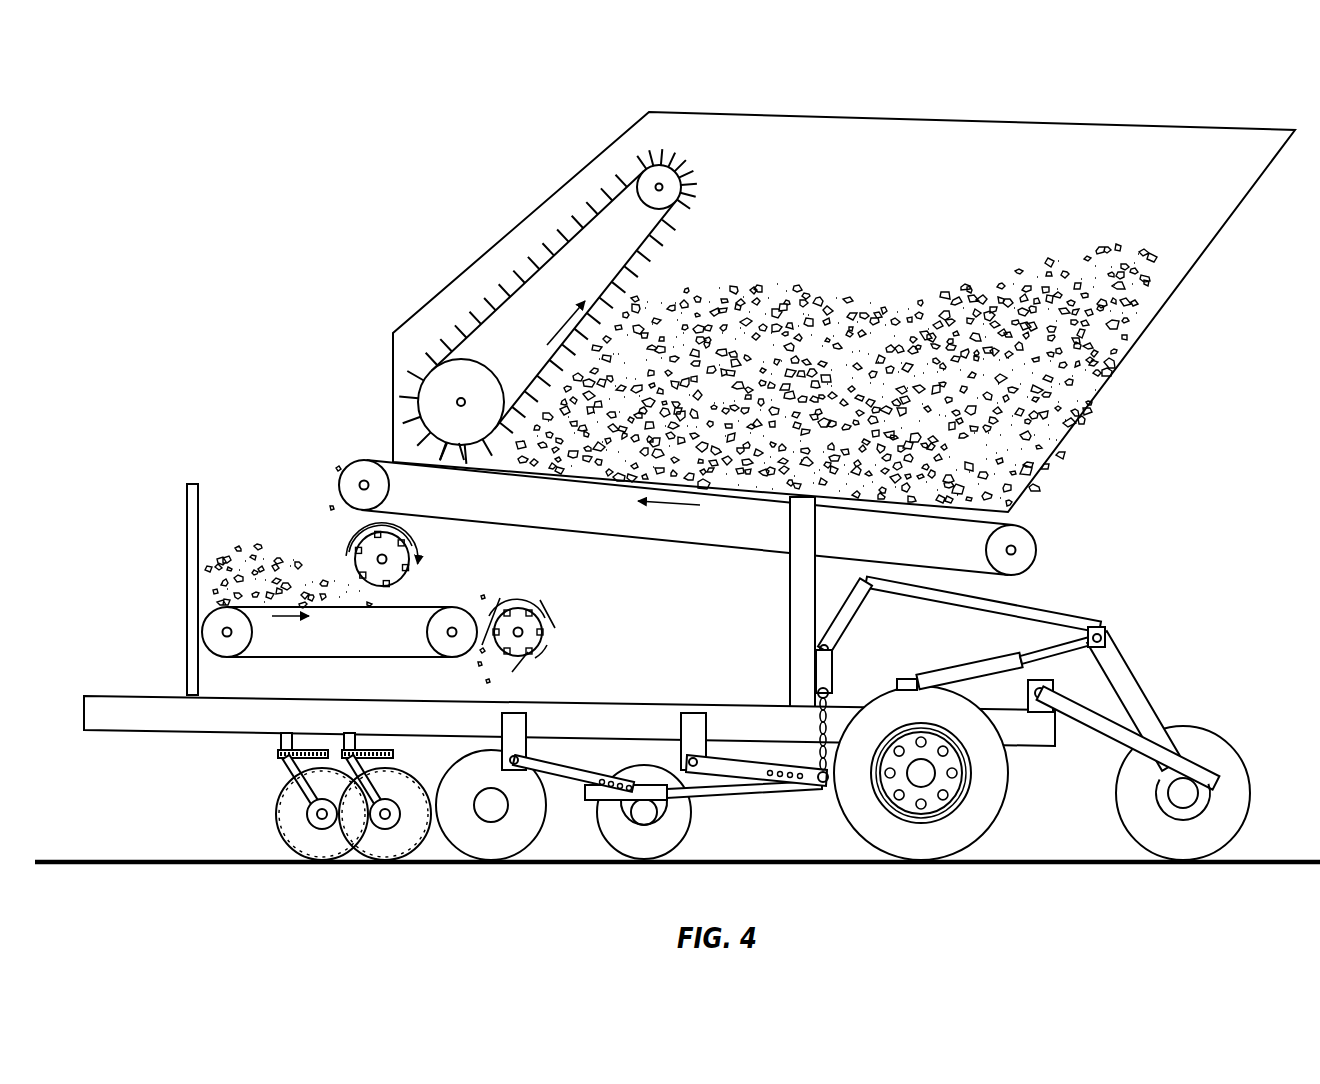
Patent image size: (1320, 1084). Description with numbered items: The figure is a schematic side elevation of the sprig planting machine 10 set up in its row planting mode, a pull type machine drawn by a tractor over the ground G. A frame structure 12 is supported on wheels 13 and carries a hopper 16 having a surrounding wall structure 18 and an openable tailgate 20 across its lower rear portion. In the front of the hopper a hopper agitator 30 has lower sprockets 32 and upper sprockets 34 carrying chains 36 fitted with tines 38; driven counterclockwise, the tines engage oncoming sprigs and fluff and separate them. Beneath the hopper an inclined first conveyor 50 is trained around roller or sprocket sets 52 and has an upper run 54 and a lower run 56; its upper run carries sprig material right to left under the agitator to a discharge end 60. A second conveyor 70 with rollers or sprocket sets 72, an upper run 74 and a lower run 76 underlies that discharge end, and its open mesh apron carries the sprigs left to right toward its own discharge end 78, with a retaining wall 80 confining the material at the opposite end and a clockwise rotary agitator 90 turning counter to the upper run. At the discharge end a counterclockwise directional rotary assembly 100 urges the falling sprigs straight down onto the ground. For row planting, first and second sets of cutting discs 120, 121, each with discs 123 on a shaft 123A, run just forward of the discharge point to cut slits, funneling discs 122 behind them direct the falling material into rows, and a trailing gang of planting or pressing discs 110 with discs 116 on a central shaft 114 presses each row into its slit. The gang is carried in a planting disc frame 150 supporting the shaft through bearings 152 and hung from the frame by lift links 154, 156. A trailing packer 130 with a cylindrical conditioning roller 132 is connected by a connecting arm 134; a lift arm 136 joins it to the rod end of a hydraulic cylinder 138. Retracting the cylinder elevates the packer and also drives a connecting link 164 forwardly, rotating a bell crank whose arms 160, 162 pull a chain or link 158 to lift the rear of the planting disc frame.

The sprig planting machine 10 is at (300, 158).
The frame structure 12 is at (158, 723).
The wheels 13 is at (940, 850).
The hopper 16 is at (1203, 110).
The wall structure 18 is at (888, 224).
The tailgate 20 is at (1052, 458).
The hopper agitator 30 is at (542, 268).
The lower sprockets 32 is at (420, 390).
The upper sprockets 34 is at (657, 163).
The chains 36 is at (537, 270).
The tines 38 is at (565, 228).
The first conveyor 50 is at (688, 539).
The roller or sprocket sets 52 is at (347, 477).
The upper run 54 is at (502, 475).
The lower run 56 is at (583, 533).
The discharge end 60 is at (650, 515).
The second conveyor 70 is at (307, 645).
The rollers or sprocket sets 72 is at (220, 613).
The upper run 74 is at (357, 606).
The lower run 76 is at (330, 658).
The discharge end 78 is at (480, 597).
The retaining wall 80 is at (187, 505).
The rotary agitator 90 is at (320, 543).
The directional rotary assembly 100 is at (571, 639).
The gang of planting or pressing discs 110 is at (669, 835).
The central shaft 114 is at (660, 815).
The discs 116 is at (660, 850).
The first set of cutting discs 120 is at (344, 818).
The second set of cutting discs 121 is at (430, 848).
The funneling discs 122 is at (542, 849).
The discs 123 is at (285, 818).
The shaft 123A is at (315, 810).
The trailing packer 130 is at (1168, 743).
The cylindrical conditioning roller 132 is at (1230, 805).
The connecting arm 134 is at (1110, 740).
The lift arm 136 is at (1128, 690).
The hydraulic cylinder 138 is at (990, 670).
The planting disc frame 150 is at (760, 790).
The bearings 152 is at (653, 790).
The lift link 154 is at (565, 760).
The lift link 156 is at (666, 746).
The chain or link 158 is at (837, 715).
The bell crank arm 160 is at (822, 665).
The bell crank arm 162 is at (852, 612).
The connecting link 164 is at (1023, 607).
The ground G is at (110, 870).